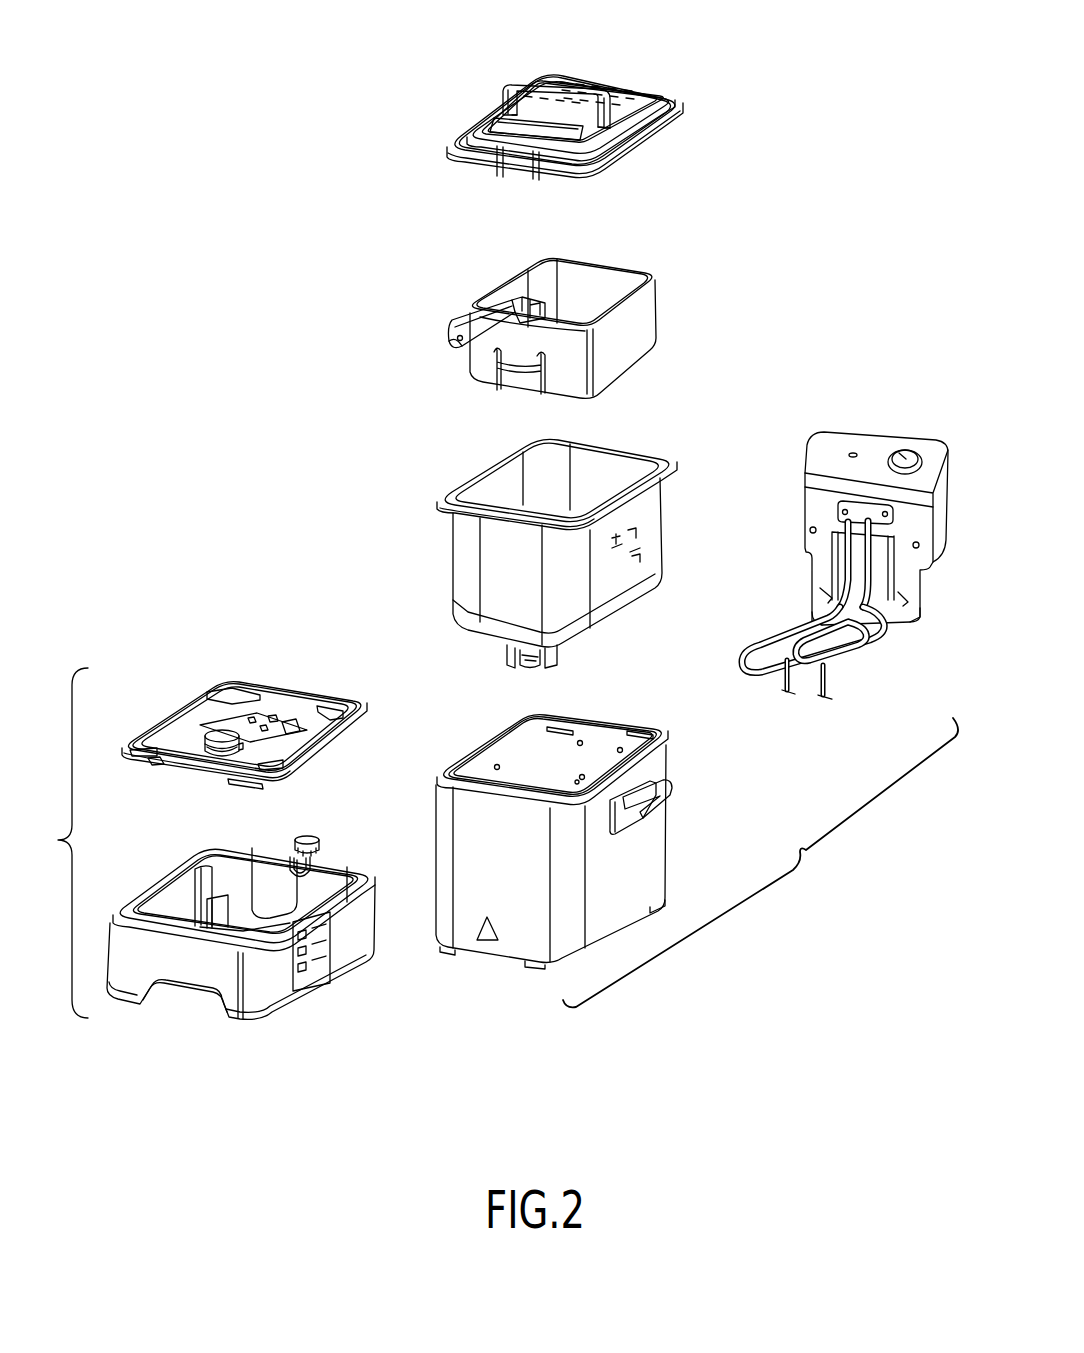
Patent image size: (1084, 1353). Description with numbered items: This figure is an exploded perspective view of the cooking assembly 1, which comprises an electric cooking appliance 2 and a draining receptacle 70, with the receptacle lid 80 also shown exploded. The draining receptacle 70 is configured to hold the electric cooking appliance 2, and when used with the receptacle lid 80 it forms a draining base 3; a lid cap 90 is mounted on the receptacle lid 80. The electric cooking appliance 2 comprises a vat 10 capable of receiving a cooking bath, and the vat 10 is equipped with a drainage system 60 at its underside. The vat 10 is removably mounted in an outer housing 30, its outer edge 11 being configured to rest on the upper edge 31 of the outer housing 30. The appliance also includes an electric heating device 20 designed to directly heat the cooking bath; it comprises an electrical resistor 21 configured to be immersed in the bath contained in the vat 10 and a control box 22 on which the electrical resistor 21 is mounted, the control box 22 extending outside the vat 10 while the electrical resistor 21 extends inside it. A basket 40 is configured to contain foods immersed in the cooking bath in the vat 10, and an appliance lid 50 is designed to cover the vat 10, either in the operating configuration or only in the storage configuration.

The cooking assembly 1 is at (737, 1013).
The electric cooking appliance 2 is at (760, 862).
The draining base 3 is at (64, 843).
The vat 10 is at (536, 576).
The outer edge 11 is at (665, 470).
The electric heating device 20 is at (845, 562).
The electrical resistor 21 is at (768, 637).
The control box 22 is at (872, 445).
The outer housing 30 is at (604, 814).
The upper edge 31 is at (622, 722).
The basket 40 is at (662, 322).
The appliance lid 50 is at (655, 148).
The drainage system 60 is at (525, 662).
The draining receptacle 70 is at (329, 1002).
The receptacle lid 80 is at (244, 694).
The lid cap 90 is at (214, 732).